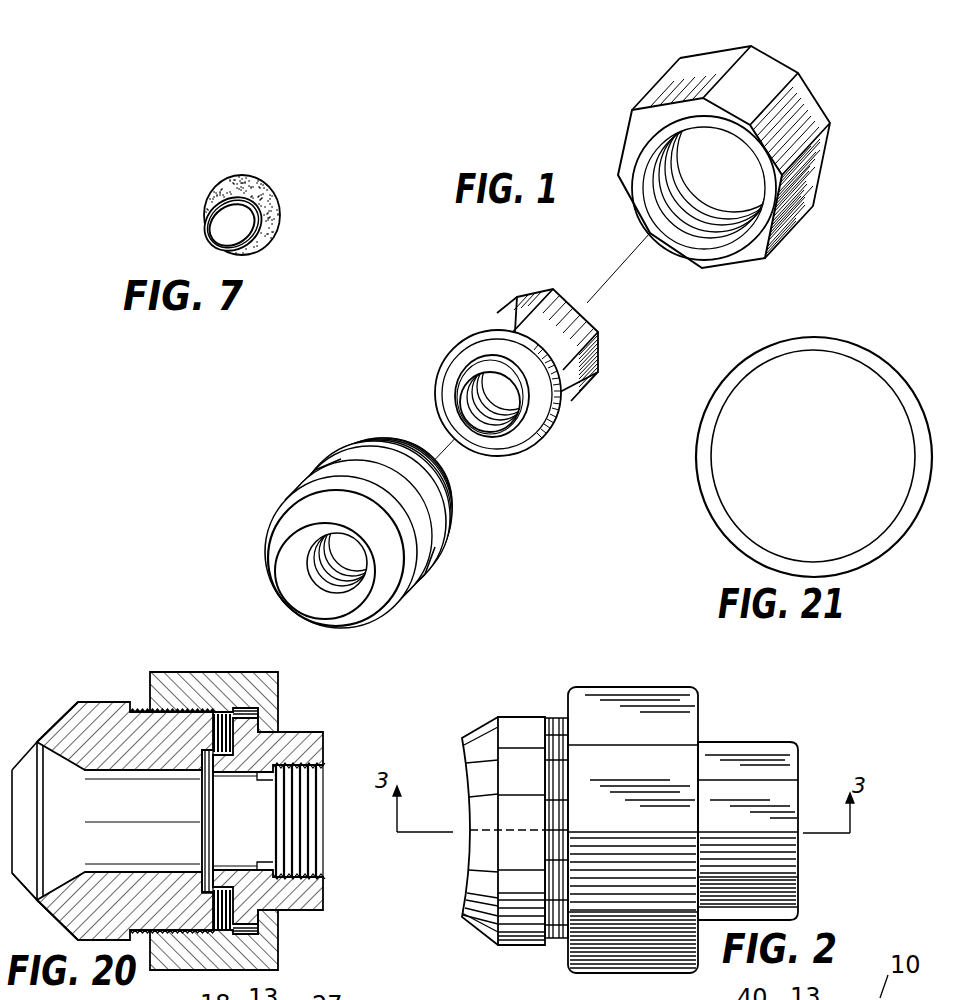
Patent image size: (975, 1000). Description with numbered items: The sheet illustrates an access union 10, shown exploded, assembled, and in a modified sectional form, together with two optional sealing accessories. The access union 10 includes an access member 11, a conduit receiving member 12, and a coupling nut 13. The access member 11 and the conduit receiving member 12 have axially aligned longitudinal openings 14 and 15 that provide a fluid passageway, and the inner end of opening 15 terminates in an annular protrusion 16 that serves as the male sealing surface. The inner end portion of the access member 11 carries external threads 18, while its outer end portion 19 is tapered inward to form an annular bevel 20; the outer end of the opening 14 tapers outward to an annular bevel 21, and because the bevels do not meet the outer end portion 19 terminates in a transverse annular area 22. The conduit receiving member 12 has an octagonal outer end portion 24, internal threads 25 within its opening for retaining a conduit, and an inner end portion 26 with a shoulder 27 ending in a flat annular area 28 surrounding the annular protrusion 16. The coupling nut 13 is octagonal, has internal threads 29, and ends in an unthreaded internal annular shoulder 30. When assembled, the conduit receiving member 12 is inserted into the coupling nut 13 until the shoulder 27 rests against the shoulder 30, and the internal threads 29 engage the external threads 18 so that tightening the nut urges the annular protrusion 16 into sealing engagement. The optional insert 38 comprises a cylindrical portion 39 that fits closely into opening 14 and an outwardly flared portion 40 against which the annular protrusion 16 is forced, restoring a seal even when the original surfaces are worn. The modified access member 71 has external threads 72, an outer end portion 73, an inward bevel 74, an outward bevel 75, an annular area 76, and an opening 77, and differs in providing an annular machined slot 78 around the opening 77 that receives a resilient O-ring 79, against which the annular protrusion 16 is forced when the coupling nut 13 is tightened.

In FIG. 20, the access union 10 is at (184, 797).
In FIG. 2, the access union 10 is at (618, 823).
In FIG. 1, the access member 11 is at (359, 562).
In FIG. 20, the access member 11 is at (113, 803).
In FIG. 2, the access member 11 is at (493, 826).
In FIG. 1, the conduit receiving member 12 is at (521, 388).
In FIG. 20, the conduit receiving member 12 is at (284, 790).
In FIG. 2, the conduit receiving member 12 is at (772, 755).
In FIG. 1, the coupling nut 13 is at (724, 155).
In FIG. 20, the coupling nut 13 is at (214, 811).
In FIG. 2, the coupling nut 13 is at (636, 779).
In FIG. 1, the opening 14 is at (287, 567).
In FIG. 1, the opening 15 is at (478, 407).
In FIG. 1, the annular protrusion 16 is at (528, 422).
In FIG. 20, the annular protrusion 16 is at (213, 867).
In FIG. 1, the external threads 18 is at (440, 560).
In FIG. 1, the outer end portion 19 is at (410, 600).
In FIG. 2, the outer end portion 19 is at (523, 715).
In FIG. 1, the annular bevel 20 is at (383, 613).
In FIG. 2, the annular bevel 20 is at (480, 933).
In FIG. 1, the annular bevel 21 is at (313, 580).
In FIG. 1, the annular area 22 is at (330, 620).
In FIG. 2, the annular area 22 is at (468, 860).
In FIG. 1, the outer end portion 24 is at (587, 383).
In FIG. 20, the outer end portion 24 is at (263, 883).
In FIG. 20, the internal threads 25 is at (263, 797).
In FIG. 1, the inner end portion 26 is at (562, 422).
In FIG. 1, the shoulder 27 is at (463, 345).
In FIG. 20, the shoulder 27 is at (248, 730).
In FIG. 1, the annular area 28 is at (503, 448).
In FIG. 1, the internal threads 29 is at (722, 233).
In FIG. 20, the internal threads 29 is at (180, 940).
In FIG. 1, the internal annular shoulder 30 is at (715, 143).
In FIG. 20, the internal annular shoulder 30 is at (223, 660).
In FIG. 7, the insert 38 is at (266, 190).
In FIG. 7, the cylindrical portion 39 is at (263, 240).
In FIG. 7, the flared portion 40 is at (247, 180).
In FIG. 20, the modified access member 71 is at (67, 933).
In FIG. 20, the external threads 72 is at (147, 683).
In FIG. 20, the outer end portion 73 is at (120, 693).
In FIG. 20, the inward bevel 74 is at (67, 710).
In FIG. 20, the outward bevel 75 is at (71, 828).
In FIG. 20, the annular area 76 is at (33, 860).
In FIG. 20, the opening 77 is at (148, 806).
In FIG. 20, the annular machined slot 78 is at (200, 885).
In FIG. 21, the O-ring 79 is at (915, 437).
In FIG. 20, the O-ring 79 is at (205, 780).